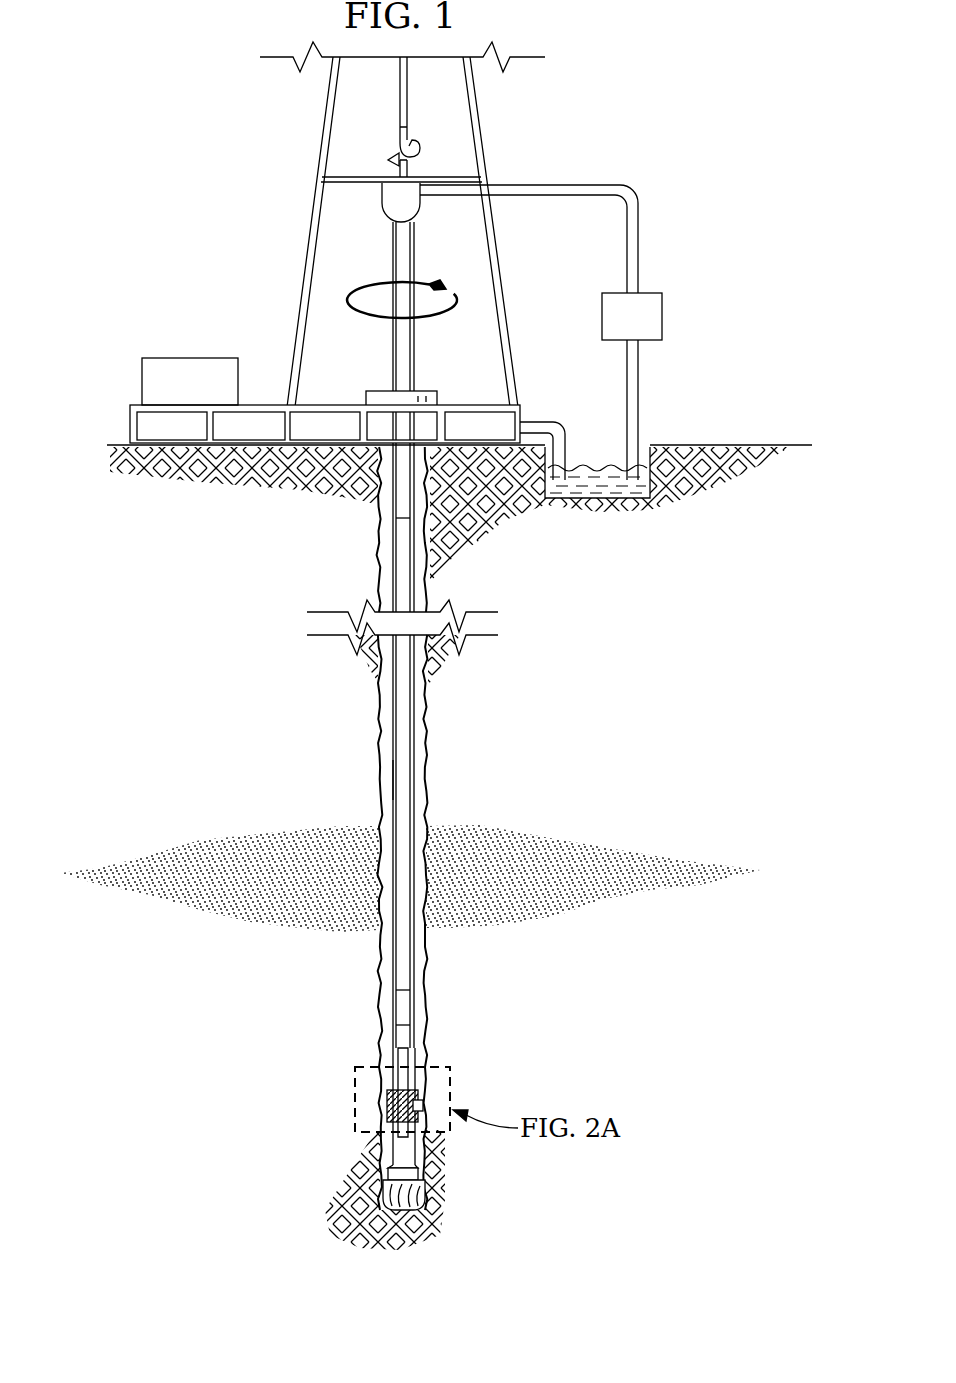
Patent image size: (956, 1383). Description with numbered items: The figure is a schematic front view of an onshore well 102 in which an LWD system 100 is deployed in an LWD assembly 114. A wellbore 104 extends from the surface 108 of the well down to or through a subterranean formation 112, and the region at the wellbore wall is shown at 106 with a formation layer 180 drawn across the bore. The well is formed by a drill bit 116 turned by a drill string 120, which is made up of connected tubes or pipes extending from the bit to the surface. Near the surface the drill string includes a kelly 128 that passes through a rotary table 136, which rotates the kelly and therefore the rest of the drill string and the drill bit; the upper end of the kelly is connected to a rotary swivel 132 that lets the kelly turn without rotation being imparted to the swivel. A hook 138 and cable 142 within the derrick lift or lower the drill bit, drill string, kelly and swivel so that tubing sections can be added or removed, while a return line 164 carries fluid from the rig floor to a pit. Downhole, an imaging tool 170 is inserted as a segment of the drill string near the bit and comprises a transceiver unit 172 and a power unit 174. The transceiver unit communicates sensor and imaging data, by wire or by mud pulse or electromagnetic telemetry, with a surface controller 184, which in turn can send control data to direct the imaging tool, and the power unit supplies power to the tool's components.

The LWD system 100 is at (248, 211).
The well 102 is at (426, 384).
The wellbore 104 is at (378, 738).
The annulus 106 is at (428, 768).
The surface 108 is at (748, 445).
The subterranean formation 112 is at (498, 742).
The LWD assembly 114 is at (420, 713).
The drill bit 116 is at (425, 1196).
The drill string 120 is at (392, 777).
The kelly 128 is at (400, 508).
The rotary swivel 132 is at (386, 219).
The rotary table 136 is at (378, 390).
The hook 138 is at (418, 158).
The cable 142 is at (398, 117).
The mud return line 164 is at (535, 422).
The imaging tool 170 is at (386, 1101).
The transceiver unit 172 is at (400, 1005).
The power unit 174 is at (405, 1040).
The formation layer 180 is at (233, 932).
The surface controller 184 is at (188, 358).